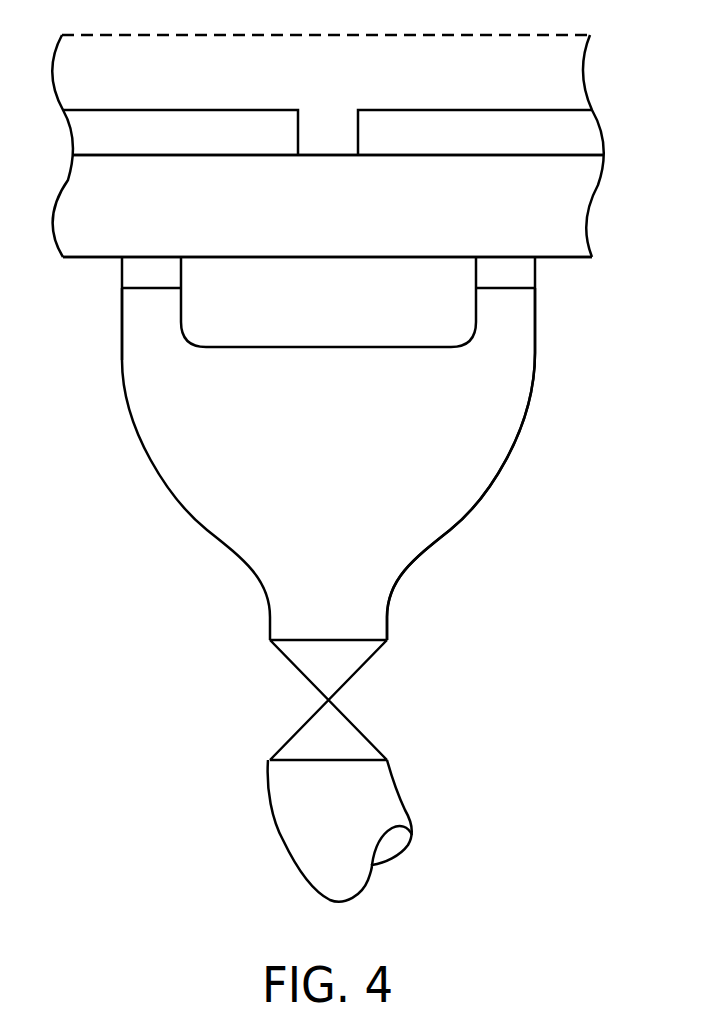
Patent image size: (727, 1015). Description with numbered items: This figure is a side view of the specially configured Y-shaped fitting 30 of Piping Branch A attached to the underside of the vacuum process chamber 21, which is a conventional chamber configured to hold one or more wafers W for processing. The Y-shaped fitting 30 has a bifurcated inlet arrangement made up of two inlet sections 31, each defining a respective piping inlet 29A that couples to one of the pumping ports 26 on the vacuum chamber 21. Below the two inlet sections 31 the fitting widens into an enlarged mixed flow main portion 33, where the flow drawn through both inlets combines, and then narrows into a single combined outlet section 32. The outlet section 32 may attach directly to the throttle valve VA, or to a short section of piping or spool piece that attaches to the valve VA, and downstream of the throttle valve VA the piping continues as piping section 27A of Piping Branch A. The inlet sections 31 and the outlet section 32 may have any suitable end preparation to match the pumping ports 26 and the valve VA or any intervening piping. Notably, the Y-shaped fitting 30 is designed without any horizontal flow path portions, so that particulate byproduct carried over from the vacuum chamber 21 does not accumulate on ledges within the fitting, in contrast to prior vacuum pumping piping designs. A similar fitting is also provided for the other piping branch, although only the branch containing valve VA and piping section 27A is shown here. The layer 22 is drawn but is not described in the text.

The vacuum process chamber 21 is at (562, 73).
The wafer W is at (583, 133).
The dielectric layer 22 is at (343, 228).
The pumping port 26 is at (135, 272).
The piping inlet 29A is at (150, 298).
The Y-shaped fitting 30 is at (343, 463).
The inlet section 31 is at (520, 330).
The outlet section 32 is at (368, 597).
The mixed flow main portion 33 is at (498, 448).
The throttle valve VA is at (298, 678).
The piping section 27A is at (280, 832).